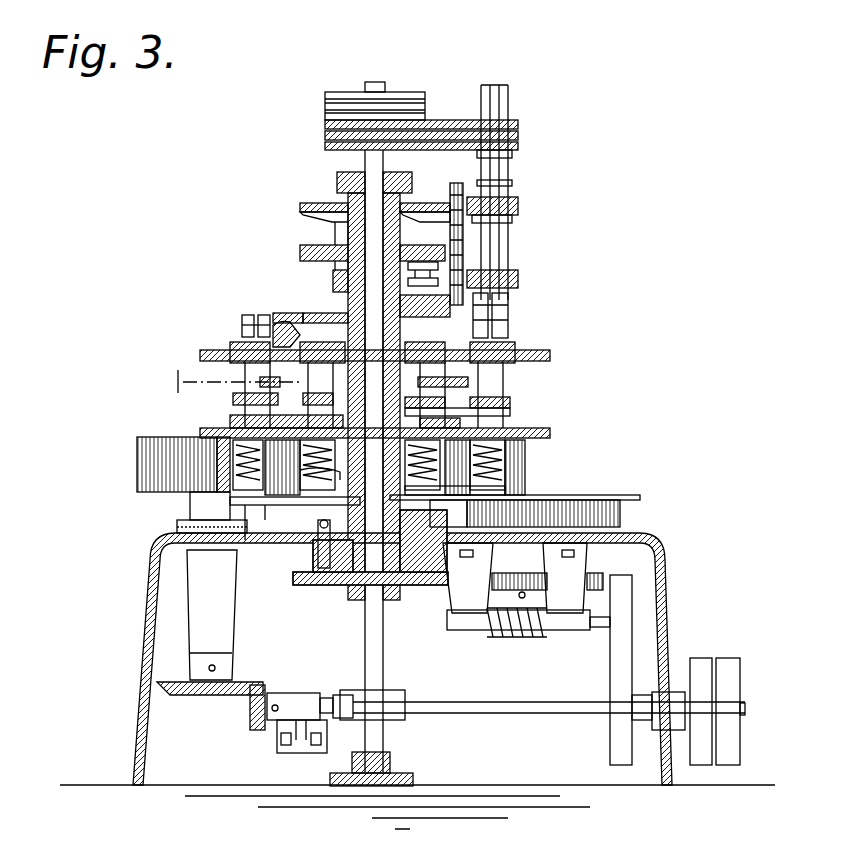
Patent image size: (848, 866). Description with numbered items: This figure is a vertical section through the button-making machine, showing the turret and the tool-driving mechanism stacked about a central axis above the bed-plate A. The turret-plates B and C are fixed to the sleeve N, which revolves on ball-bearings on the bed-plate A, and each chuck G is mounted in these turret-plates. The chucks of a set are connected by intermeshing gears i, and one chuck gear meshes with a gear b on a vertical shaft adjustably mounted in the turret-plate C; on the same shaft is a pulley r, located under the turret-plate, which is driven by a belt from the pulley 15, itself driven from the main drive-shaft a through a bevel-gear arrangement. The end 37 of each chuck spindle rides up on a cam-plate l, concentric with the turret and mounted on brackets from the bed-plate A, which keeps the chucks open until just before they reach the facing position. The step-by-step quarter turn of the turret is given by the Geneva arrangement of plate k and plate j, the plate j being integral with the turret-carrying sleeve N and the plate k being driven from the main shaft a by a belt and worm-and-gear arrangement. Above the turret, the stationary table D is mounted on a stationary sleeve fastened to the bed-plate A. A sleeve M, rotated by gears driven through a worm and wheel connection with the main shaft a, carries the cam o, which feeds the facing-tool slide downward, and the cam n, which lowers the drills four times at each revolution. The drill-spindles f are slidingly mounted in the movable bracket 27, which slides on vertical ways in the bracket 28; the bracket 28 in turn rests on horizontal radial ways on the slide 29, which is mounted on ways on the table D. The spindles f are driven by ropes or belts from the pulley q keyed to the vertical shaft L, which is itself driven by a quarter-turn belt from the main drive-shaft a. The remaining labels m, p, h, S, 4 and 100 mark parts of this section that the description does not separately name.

The vertical shaft L is at (371, 82).
The pulley q is at (398, 92).
The drill-spindles f is at (500, 85).
The sleeve M is at (427, 172).
The hub m is at (337, 180).
The cam n is at (300, 209).
The cam o is at (300, 248).
The bracket p is at (333, 274).
The table D is at (280, 315).
The plate or cam k is at (342, 312).
The plate j is at (303, 525).
The chuck G is at (242, 320).
The bracket 28 is at (468, 193).
The movable bracket 27 is at (520, 206).
The slide 29 is at (518, 287).
The turret-plate B is at (545, 354).
The bracket h is at (508, 378).
The gear i is at (240, 396).
The turret-plate C is at (540, 410).
The gear b is at (520, 410).
The bracket plate 4 is at (637, 500).
The pulley 15 is at (137, 451).
The spring S is at (520, 470).
The extension 37 is at (470, 490).
The pulley r is at (505, 493).
The cam-plate l is at (320, 487).
The sleeve N is at (283, 502).
The main drive-shaft a is at (556, 712).
The worm gear 100 is at (613, 558).
The bed-plate A is at (675, 582).